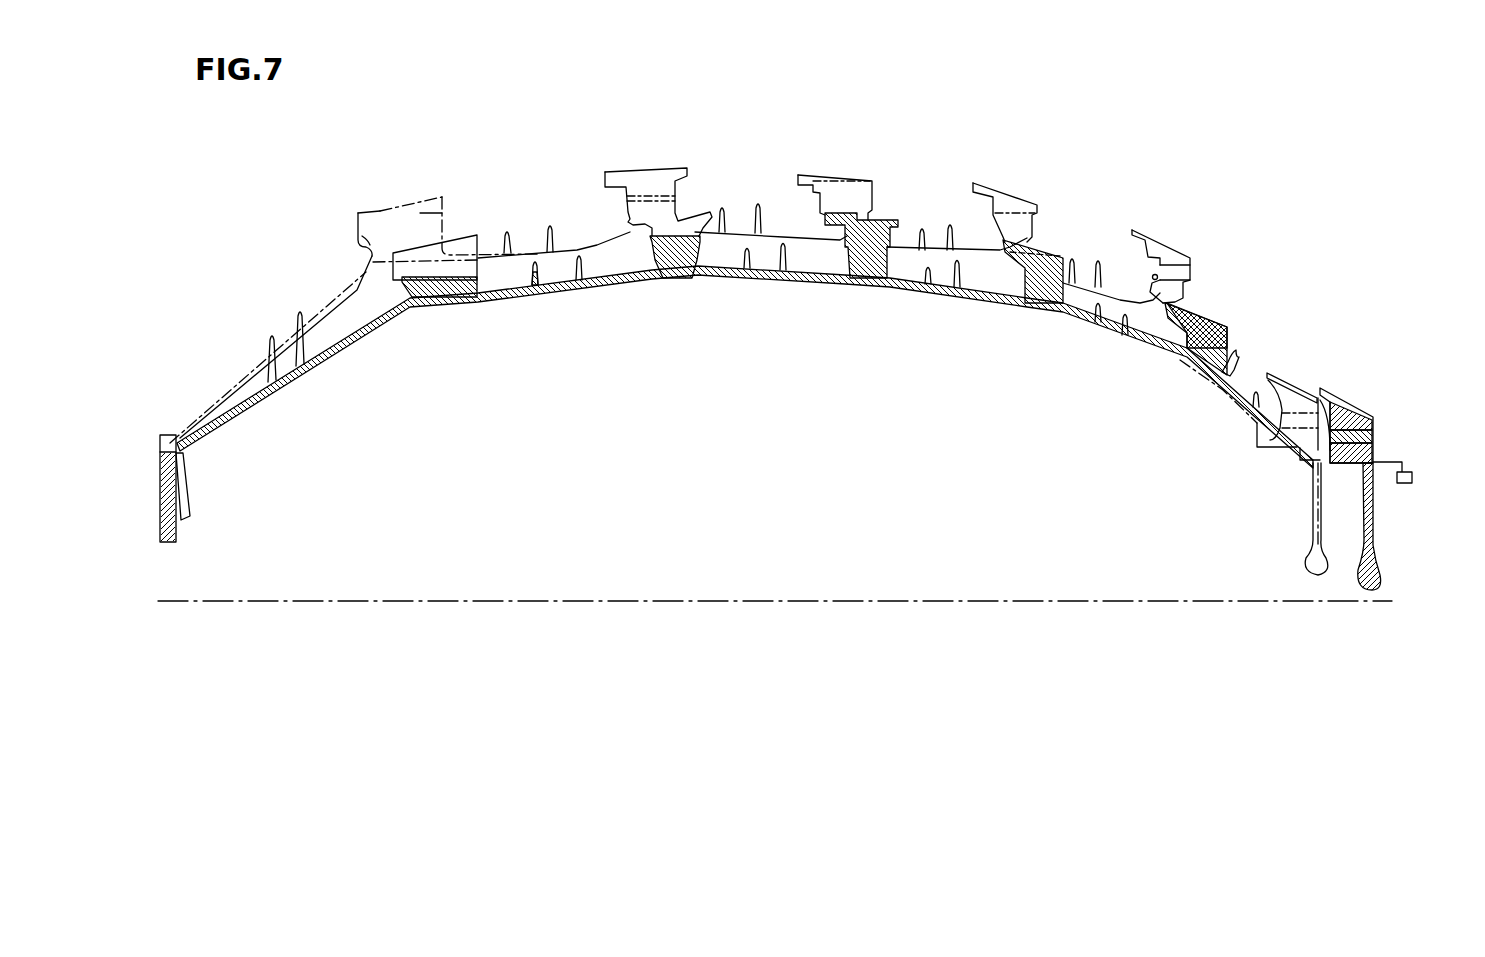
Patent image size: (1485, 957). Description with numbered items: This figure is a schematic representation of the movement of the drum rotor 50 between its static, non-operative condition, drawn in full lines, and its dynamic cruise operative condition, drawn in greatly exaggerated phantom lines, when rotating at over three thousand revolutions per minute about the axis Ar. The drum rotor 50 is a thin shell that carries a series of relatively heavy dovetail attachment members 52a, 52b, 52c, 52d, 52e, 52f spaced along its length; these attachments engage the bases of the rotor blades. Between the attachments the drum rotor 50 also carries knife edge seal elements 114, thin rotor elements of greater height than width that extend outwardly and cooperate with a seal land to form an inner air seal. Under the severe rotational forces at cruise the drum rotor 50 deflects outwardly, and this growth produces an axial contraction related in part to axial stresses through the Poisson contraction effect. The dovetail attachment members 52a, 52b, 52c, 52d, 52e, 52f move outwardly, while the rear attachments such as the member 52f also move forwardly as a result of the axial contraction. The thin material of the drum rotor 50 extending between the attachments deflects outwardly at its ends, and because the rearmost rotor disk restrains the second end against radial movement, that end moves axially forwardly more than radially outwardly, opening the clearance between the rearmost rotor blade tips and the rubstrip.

The drum rotor 50 is at (997, 302).
The knife edge seal element 114 is at (546, 274).
The dovetail attachment member 52a is at (442, 205).
The dovetail attachment member 52b is at (690, 182).
The dovetail attachment member 52c is at (880, 190).
The dovetail attachment member 52d is at (1050, 211).
The dovetail attachment member 52e is at (1195, 262).
The dovetail attachment member 52f is at (1310, 392).
The axis of rotation Ar is at (178, 601).